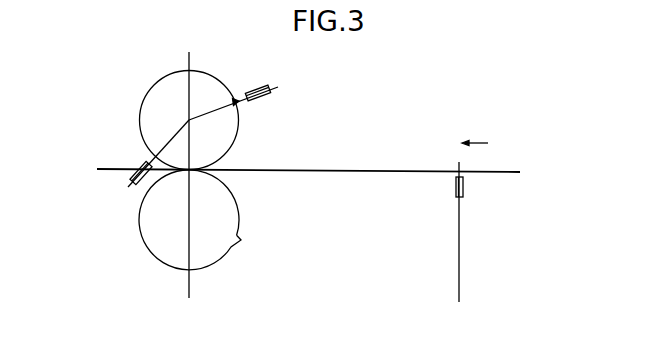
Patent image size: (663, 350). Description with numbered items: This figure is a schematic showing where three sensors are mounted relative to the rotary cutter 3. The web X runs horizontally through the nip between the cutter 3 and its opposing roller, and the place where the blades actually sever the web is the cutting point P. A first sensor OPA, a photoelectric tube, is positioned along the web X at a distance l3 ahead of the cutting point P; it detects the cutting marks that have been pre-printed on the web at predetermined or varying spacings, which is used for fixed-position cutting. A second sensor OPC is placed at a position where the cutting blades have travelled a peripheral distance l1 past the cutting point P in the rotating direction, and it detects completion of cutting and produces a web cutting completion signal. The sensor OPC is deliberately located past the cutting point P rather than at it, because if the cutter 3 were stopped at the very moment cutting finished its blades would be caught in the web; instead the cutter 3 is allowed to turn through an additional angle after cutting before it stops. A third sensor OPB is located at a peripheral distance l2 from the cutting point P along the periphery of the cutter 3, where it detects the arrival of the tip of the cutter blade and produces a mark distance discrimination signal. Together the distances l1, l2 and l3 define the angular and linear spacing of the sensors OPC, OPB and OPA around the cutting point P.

The cutter 3 is at (158, 238).
The sensor (photoelectric tube) OPA is at (466, 186).
The third sensor OPB is at (257, 78).
The sensor OPC is at (137, 166).
The web X is at (326, 170).
The cutting point P is at (208, 167).
The peripheral distance l1 is at (165, 148).
The peripheral distance l2 is at (189, 156).
The distance l3 is at (189, 290).